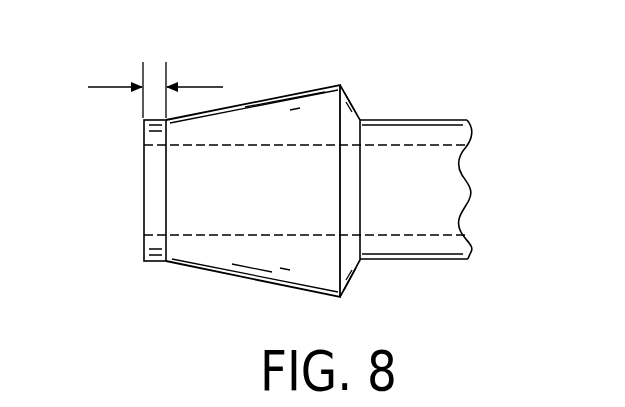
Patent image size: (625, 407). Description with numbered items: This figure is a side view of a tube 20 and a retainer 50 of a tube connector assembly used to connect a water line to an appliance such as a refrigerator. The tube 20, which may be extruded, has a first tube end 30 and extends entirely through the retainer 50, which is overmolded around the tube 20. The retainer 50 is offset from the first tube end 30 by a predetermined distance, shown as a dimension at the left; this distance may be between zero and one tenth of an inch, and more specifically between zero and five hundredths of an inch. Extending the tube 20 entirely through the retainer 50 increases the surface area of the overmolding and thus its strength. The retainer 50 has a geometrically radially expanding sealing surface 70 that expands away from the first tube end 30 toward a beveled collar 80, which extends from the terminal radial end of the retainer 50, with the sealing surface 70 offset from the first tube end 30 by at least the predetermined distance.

The tube 20 is at (422, 137).
The first tube end 30 is at (141, 161).
The retainer 50 is at (106, 87).
The sealing surface 70 is at (241, 283).
The beveled collar 80 is at (357, 274).